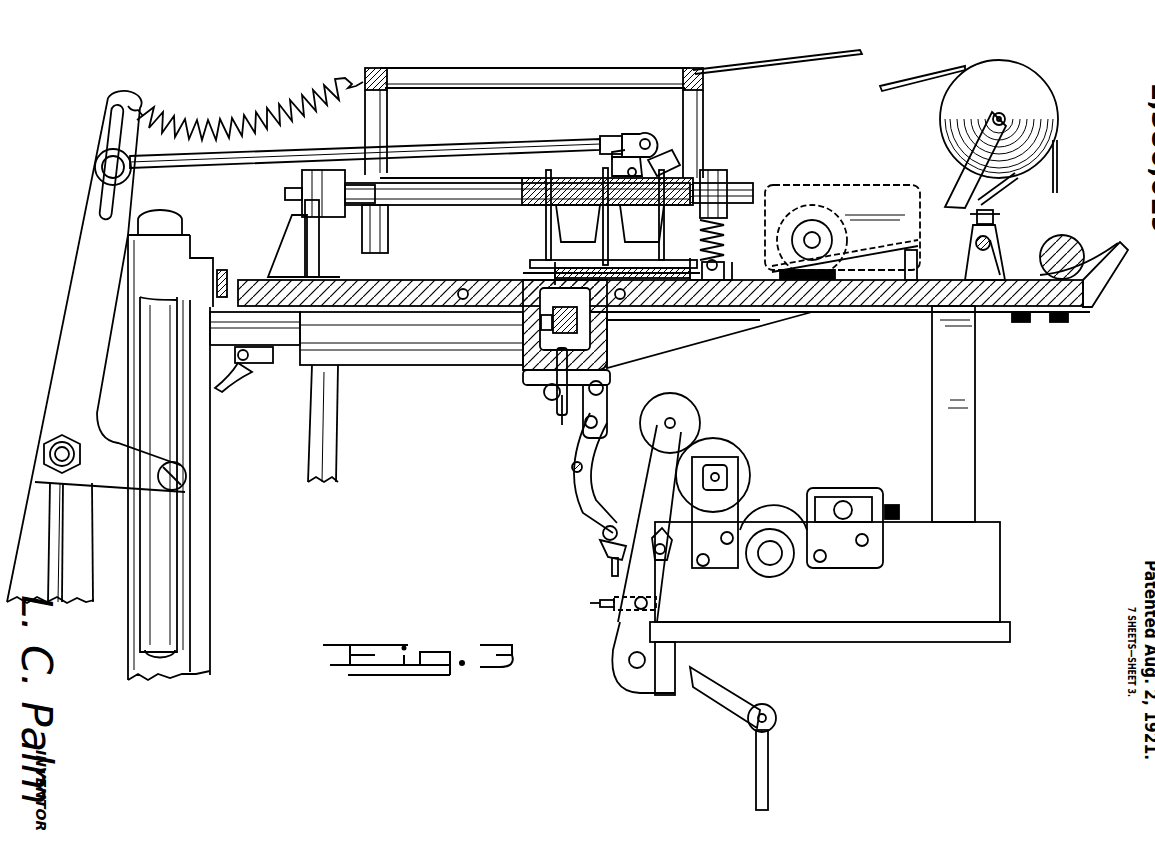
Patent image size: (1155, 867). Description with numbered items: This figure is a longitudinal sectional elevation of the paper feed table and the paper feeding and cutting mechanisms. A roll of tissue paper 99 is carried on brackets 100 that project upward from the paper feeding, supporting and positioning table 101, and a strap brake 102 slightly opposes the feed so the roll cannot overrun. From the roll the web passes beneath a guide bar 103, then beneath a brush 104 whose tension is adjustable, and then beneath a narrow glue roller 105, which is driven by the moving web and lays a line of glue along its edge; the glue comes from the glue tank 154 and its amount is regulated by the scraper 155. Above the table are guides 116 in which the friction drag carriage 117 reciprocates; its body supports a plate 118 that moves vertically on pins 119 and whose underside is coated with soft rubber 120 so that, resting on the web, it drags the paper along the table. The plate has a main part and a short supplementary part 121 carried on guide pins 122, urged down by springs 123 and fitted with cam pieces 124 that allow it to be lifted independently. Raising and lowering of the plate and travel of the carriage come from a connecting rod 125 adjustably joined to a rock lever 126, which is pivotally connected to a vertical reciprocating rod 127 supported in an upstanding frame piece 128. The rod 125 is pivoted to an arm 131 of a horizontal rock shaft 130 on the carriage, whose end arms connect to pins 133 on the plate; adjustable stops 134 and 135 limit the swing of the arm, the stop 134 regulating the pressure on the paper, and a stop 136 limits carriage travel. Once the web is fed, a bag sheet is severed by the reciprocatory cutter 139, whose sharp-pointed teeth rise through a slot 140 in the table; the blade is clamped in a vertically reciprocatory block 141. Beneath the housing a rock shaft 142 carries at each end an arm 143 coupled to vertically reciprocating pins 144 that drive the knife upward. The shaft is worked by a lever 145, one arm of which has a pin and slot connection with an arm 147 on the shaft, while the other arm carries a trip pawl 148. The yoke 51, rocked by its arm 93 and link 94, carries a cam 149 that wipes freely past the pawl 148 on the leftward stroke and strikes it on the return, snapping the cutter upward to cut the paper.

The rock lever or yoke 51 is at (655, 488).
The arm 93 is at (710, 695).
The link 94 is at (755, 781).
The roll of material 99 is at (965, 100).
The brackets 100 is at (1100, 292).
The paper feeding, supporting and positioning table 101 is at (905, 292).
The strap brake 102 is at (892, 88).
The guide bar 103 is at (1062, 250).
The brush 104 is at (975, 270).
The glue roller 105 is at (817, 203).
The guides 116 is at (450, 186).
The friction drag carriage 117 is at (580, 195).
The plate 118 is at (530, 264).
The pins 119 is at (545, 227).
The soft rubber coating 120 is at (530, 272).
The supplementary part 121 is at (725, 273).
The guide pins 122 is at (720, 234).
The springs 123 is at (708, 252).
The cam pieces 124 is at (722, 264).
The connecting rod 125 is at (428, 152).
The rock lever 126 is at (95, 243).
The vertical reciprocating rod 127 is at (158, 622).
The upstanding frame piece 128 is at (200, 547).
The horizontal rock shaft 130 is at (643, 137).
The arm 131 is at (617, 138).
The pins 133 is at (608, 251).
The adjustable stop 134 is at (600, 143).
The adjustable stop 135 is at (647, 162).
The stop 136 is at (362, 195).
The reciprocatory cutter 139 is at (530, 313).
The slot 140 is at (556, 278).
The vertically reciprocatory block 141 is at (538, 372).
The rock shaft 142 is at (604, 387).
The arm 143 is at (580, 405).
The vertically reciprocating pins 144 is at (560, 405).
The lever 145 is at (580, 487).
The arm 147 is at (600, 410).
The trip pawl 148 is at (608, 548).
The cam 149 is at (662, 553).
The glue tank 154 is at (862, 215).
The scraper 155 is at (893, 243).